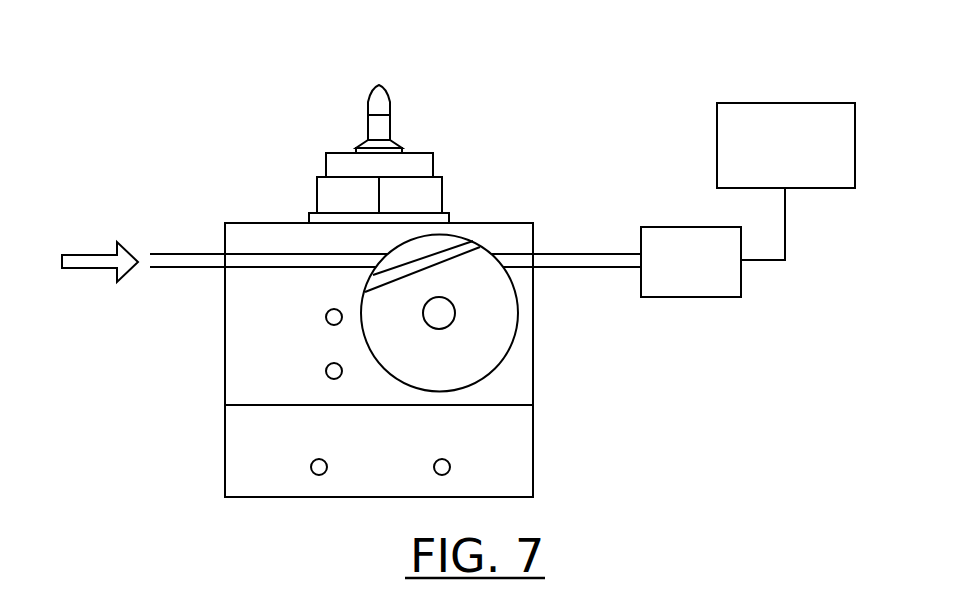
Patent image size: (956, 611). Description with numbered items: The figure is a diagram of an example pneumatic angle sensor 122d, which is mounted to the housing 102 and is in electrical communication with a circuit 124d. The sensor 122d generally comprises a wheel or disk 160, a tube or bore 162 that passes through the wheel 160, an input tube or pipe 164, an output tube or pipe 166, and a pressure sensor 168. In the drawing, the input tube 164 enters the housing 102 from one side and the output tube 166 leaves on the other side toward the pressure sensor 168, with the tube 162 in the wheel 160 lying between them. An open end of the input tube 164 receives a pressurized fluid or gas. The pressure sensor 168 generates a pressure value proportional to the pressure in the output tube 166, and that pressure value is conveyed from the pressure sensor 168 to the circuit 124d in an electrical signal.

The pneumatic angle sensor 122d is at (518, 70).
The housing 102 is at (533, 232).
The wheel 160 is at (512, 345).
The tube 162 is at (468, 245).
The input tube 164 is at (200, 253).
The output tube 166 is at (619, 268).
The pressure sensor 168 is at (703, 297).
The circuit 124d is at (772, 102).